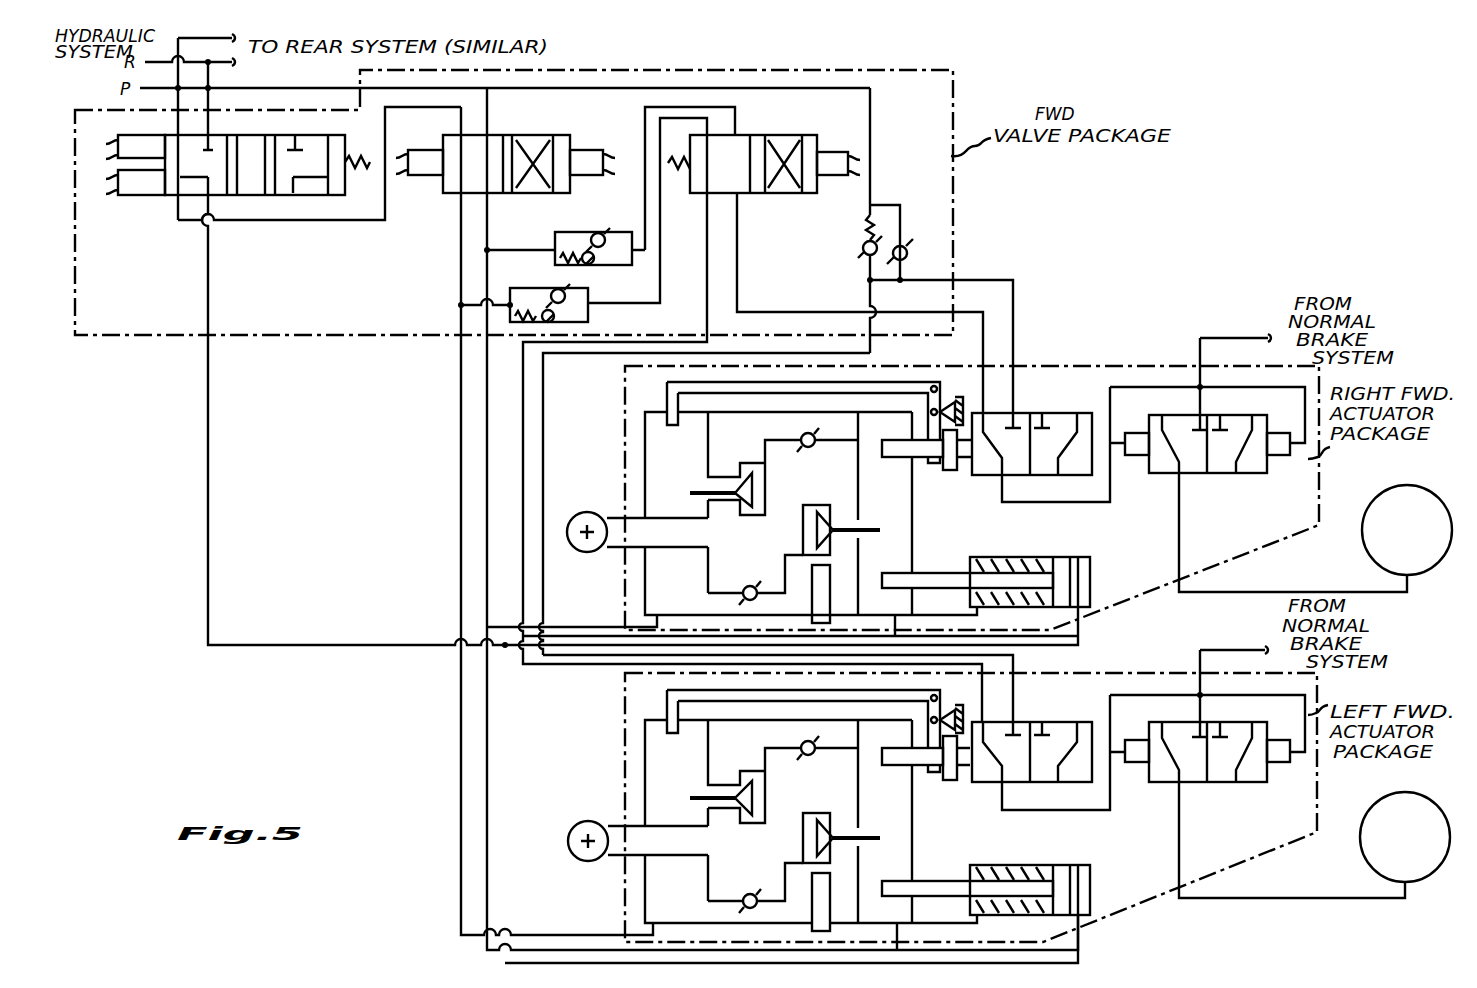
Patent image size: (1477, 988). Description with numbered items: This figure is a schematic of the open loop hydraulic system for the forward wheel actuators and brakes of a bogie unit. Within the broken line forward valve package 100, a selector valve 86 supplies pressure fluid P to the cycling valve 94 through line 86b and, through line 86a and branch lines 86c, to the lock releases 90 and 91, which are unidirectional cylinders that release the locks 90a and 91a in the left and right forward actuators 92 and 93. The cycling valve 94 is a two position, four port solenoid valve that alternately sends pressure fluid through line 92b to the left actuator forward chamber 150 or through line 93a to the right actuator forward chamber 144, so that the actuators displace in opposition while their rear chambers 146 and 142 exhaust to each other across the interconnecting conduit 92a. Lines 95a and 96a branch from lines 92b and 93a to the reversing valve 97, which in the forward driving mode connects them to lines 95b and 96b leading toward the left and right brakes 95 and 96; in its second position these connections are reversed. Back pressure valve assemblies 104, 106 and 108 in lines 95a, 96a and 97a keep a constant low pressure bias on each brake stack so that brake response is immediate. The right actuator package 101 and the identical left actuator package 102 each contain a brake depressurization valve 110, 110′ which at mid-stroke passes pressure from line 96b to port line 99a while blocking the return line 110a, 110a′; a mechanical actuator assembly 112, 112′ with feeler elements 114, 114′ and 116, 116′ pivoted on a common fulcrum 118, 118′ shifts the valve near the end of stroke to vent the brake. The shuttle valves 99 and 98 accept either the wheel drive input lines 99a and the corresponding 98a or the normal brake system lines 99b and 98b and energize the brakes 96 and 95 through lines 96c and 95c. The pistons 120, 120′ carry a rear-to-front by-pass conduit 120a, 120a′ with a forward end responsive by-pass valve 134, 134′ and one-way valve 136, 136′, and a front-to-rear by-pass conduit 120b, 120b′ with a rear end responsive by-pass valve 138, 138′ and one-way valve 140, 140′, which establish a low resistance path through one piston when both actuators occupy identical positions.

The selector valve 86 is at (157, 203).
The port line 86a is at (208, 286).
The port line 86b is at (282, 220).
The branch lines 86c is at (1085, 638).
The lock release 90 is at (1090, 874).
The lock 90a is at (838, 902).
The lock release 91 is at (1093, 568).
The lock 91a is at (830, 600).
The left forward actuator 92 is at (644, 889).
The interconnecting conduit 92a is at (487, 748).
The port line 92b is at (460, 233).
The right forward actuator 93 is at (644, 578).
The port line 93a is at (487, 222).
The cycling valve 94 is at (433, 203).
The left front brake 95 is at (1430, 886).
The hydraulic line 95a is at (660, 215).
The hydraulic line 95b is at (707, 300).
The hydraulic line 95c is at (1272, 898).
The right front brake 96 is at (1432, 578).
The hydraulic line 96a is at (645, 202).
The hydraulic line 96b is at (792, 310).
The hydraulic line 96c is at (1312, 590).
The reversing valve 97 is at (773, 200).
The line 97a is at (870, 108).
The left brake shuttle valve 98 is at (1217, 785).
The line 98a is at (1048, 812).
The normal brake system line 98b is at (1216, 648).
The right brake shuttle valve 99 is at (1227, 478).
The input port line 99a is at (1022, 506).
The input port line 99b is at (1220, 338).
The forward valve package 100 is at (955, 212).
The right forward actuator package 101 is at (1322, 474).
The left forward actuator package 102 is at (1322, 781).
The back pressure valve assembly 104 is at (614, 265).
The back pressure valve assembly 106 is at (590, 318).
The back pressure valve assembly 108 is at (902, 206).
The brake depressurization valve 110 is at (1064, 412).
The brake depressurization valve 110′ is at (1072, 722).
The port line 110a is at (1015, 303).
The port line 110a′ is at (1013, 661).
The mechanical actuator assembly 112 is at (932, 470).
The mechanical actuator assembly 112′ is at (954, 788).
The feeler element 114 is at (898, 458).
The feeler element 114′ is at (892, 768).
The feeler element 116 is at (678, 430).
The feeler element 116′ is at (662, 737).
The common fulcrum 118 is at (940, 386).
The common fulcrum 118′ is at (940, 706).
The piston 120 is at (765, 549).
The piston 120′ is at (770, 859).
The rear-to-front by-pass conduit 120a is at (780, 440).
The rear-to-front by-pass conduit 120a′ is at (782, 748).
The front-to-rear by-pass conduit 120b is at (718, 593).
The front-to-rear by-pass conduit 120b′ is at (758, 896).
The forward end responsive by-pass valve 134 is at (736, 477).
The forward end responsive by-pass valve 134′ is at (736, 786).
The rear-to-front one-way valve 136 is at (815, 450).
The rear-to-front one-way valve 136′ is at (815, 758).
The rear end responsive by-pass valve 138 is at (836, 511).
The rear end responsive by-pass valve 138′ is at (856, 840).
The front-to-rear one-way valve 140 is at (758, 587).
The front-to-rear one-way valve 140′ is at (756, 902).
The rear chamber 142 is at (892, 552).
The forward chamber 144 is at (670, 487).
The rear chamber 146 is at (888, 812).
The forward chamber 150 is at (667, 773).